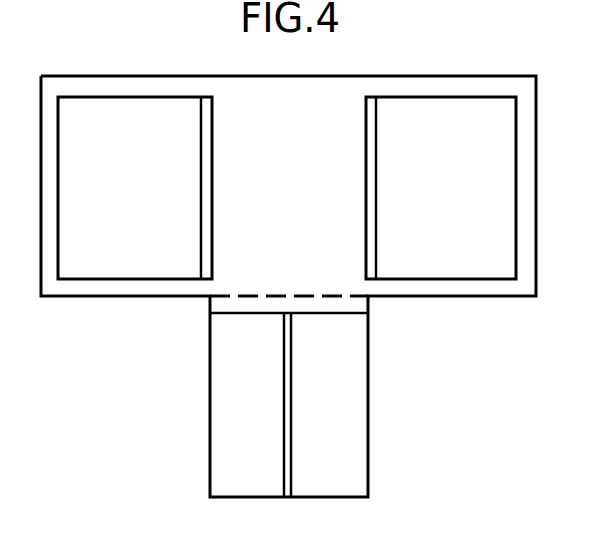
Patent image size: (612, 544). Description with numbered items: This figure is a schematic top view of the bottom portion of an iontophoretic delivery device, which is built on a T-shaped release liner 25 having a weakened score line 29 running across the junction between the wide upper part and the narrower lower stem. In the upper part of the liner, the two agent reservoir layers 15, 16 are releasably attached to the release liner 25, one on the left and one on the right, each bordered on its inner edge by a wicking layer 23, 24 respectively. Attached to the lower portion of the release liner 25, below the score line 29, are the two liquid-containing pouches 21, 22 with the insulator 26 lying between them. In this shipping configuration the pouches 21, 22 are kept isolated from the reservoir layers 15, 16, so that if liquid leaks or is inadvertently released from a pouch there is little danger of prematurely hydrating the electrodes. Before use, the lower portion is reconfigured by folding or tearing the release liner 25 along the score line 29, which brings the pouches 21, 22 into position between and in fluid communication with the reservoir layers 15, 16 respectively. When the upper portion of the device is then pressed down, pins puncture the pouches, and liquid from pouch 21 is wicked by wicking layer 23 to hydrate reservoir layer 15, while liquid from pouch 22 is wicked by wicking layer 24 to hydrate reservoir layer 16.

The release liner 25 is at (308, 92).
The agent reservoir layer 15 is at (90, 267).
The agent reservoir layer 16 is at (486, 263).
The wicking layer 23 is at (207, 254).
The wicking layer 24 is at (372, 260).
The score line 29 is at (250, 300).
The liquid-containing pouch 21 is at (218, 451).
The liquid-containing pouch 22 is at (355, 457).
The insulator 26 is at (287, 490).